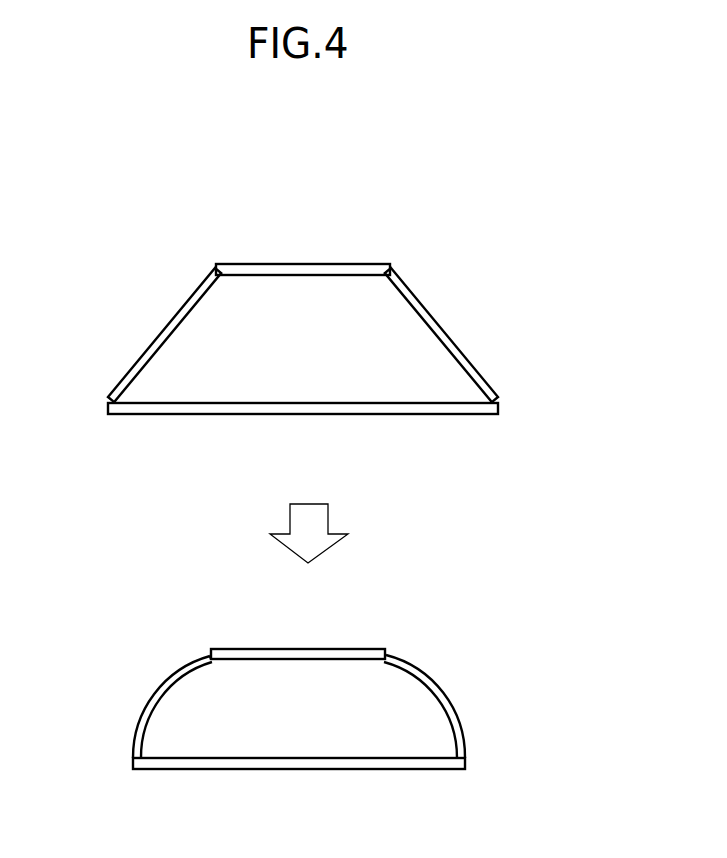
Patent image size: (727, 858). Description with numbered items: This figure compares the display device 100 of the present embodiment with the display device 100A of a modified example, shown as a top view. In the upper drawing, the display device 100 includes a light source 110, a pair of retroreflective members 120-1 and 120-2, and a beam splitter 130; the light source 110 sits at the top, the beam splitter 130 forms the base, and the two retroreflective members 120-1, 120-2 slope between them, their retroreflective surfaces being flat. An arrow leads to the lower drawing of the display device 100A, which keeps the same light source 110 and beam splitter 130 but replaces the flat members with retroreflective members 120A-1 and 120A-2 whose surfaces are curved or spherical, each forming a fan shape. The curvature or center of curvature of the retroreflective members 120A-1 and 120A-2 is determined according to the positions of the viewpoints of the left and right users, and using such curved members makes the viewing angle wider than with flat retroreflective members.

The display device 100 is at (310, 284).
The display device of the modified example 100A is at (309, 661).
The light source 110 is at (305, 264).
The retroreflective member 120-1 is at (162, 330).
The retroreflective member 120-2 is at (438, 323).
The retroreflective member 120A-1 is at (146, 708).
The retroreflective member 120A-2 is at (443, 696).
The beam splitter 130 is at (307, 414).